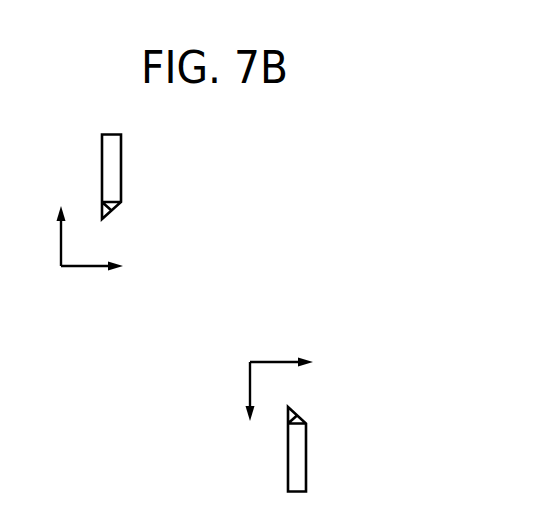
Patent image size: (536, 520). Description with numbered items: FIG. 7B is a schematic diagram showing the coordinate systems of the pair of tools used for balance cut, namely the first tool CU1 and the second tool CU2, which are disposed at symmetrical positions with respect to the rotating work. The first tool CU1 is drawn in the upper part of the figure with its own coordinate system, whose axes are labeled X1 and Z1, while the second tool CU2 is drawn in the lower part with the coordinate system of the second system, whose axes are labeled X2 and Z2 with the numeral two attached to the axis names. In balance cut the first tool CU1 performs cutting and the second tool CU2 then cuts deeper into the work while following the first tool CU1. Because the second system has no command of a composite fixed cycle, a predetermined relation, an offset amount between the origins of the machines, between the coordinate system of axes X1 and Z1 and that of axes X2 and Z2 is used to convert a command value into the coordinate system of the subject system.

The first tool CU1 is at (121, 166).
The second tool CU2 is at (306, 448).
The X1 axis X1 is at (60, 220).
The Z1 axis Z1 is at (106, 270).
The X2 axis X2 is at (252, 406).
The Z2 axis Z2 is at (297, 362).